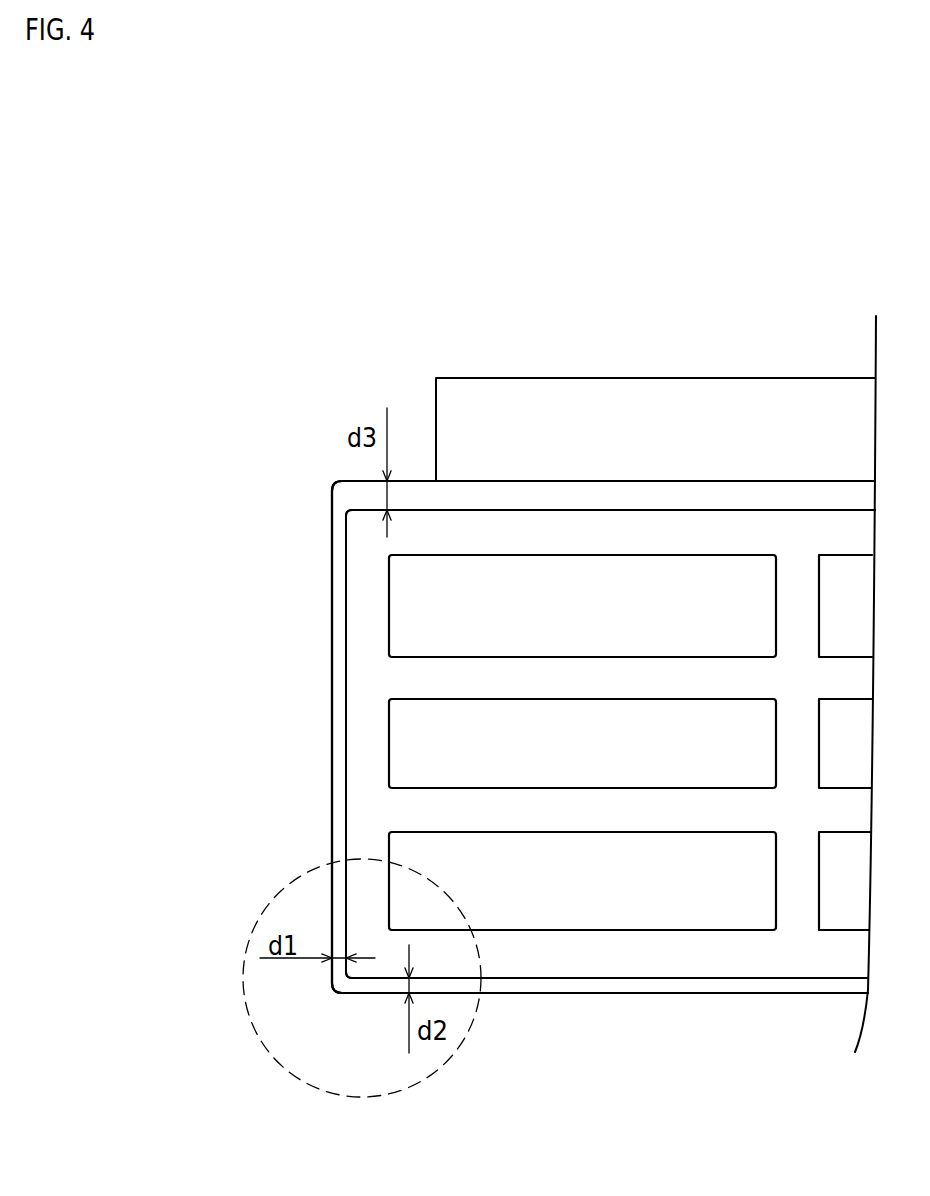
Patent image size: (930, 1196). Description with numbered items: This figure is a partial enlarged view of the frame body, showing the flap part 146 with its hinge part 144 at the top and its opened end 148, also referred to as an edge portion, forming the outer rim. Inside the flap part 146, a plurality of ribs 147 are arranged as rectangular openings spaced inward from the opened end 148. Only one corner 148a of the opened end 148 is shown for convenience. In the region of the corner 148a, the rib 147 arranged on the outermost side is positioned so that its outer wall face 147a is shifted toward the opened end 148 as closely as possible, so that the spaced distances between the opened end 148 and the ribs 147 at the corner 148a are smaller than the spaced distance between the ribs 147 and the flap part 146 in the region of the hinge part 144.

The hinge part 144 is at (600, 425).
The flap part 146 is at (333, 603).
The ribs 147 is at (372, 712).
The outer wall face 147a is at (347, 744).
The opened end 148 is at (333, 703).
The corner 148a is at (297, 1047).